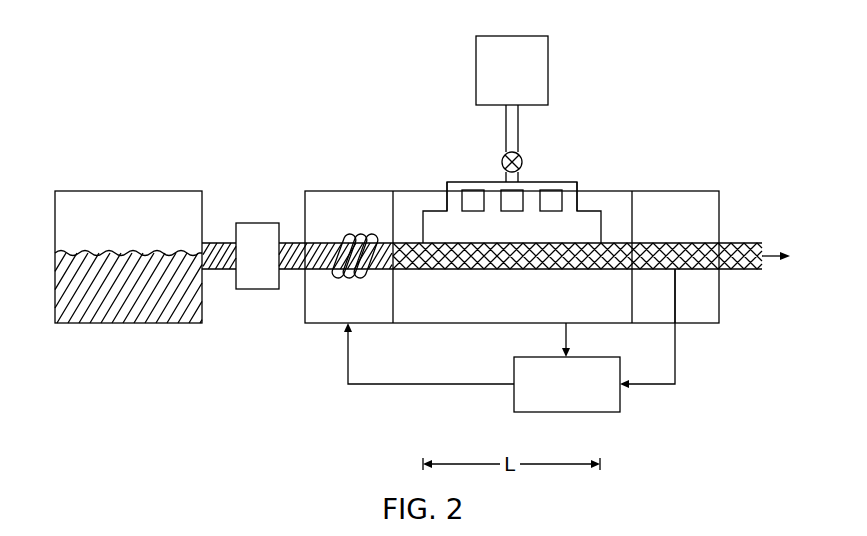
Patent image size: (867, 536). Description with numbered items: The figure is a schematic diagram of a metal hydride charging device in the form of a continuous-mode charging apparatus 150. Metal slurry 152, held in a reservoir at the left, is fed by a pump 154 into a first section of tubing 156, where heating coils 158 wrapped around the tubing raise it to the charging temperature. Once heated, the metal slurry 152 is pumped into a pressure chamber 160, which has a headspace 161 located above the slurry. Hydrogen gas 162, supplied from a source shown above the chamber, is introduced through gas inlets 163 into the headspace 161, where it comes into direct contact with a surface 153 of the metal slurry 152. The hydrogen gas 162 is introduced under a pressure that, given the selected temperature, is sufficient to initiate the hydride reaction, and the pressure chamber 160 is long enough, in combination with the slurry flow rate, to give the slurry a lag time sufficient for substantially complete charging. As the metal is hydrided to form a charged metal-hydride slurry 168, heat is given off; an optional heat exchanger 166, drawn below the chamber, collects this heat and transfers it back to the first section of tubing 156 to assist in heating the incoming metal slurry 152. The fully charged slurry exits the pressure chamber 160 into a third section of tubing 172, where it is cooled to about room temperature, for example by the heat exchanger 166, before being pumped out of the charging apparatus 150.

The continuous-mode charging apparatus 150 is at (188, 42).
The metal slurry 152 is at (100, 312).
The surface of the metal slurry 153 is at (447, 243).
The pump 154 is at (258, 222).
The first section of tubing 156 is at (299, 271).
The heating coils 158 is at (360, 232).
The pressure chamber 160 is at (605, 222).
The headspace 161 is at (527, 237).
The hydrogen gas 162 is at (548, 72).
The gas inlets 163 is at (447, 212).
The heat exchanger 166 is at (566, 412).
The charged metal-hydride slurry 168 is at (735, 262).
The third section of tubing 172 is at (683, 270).